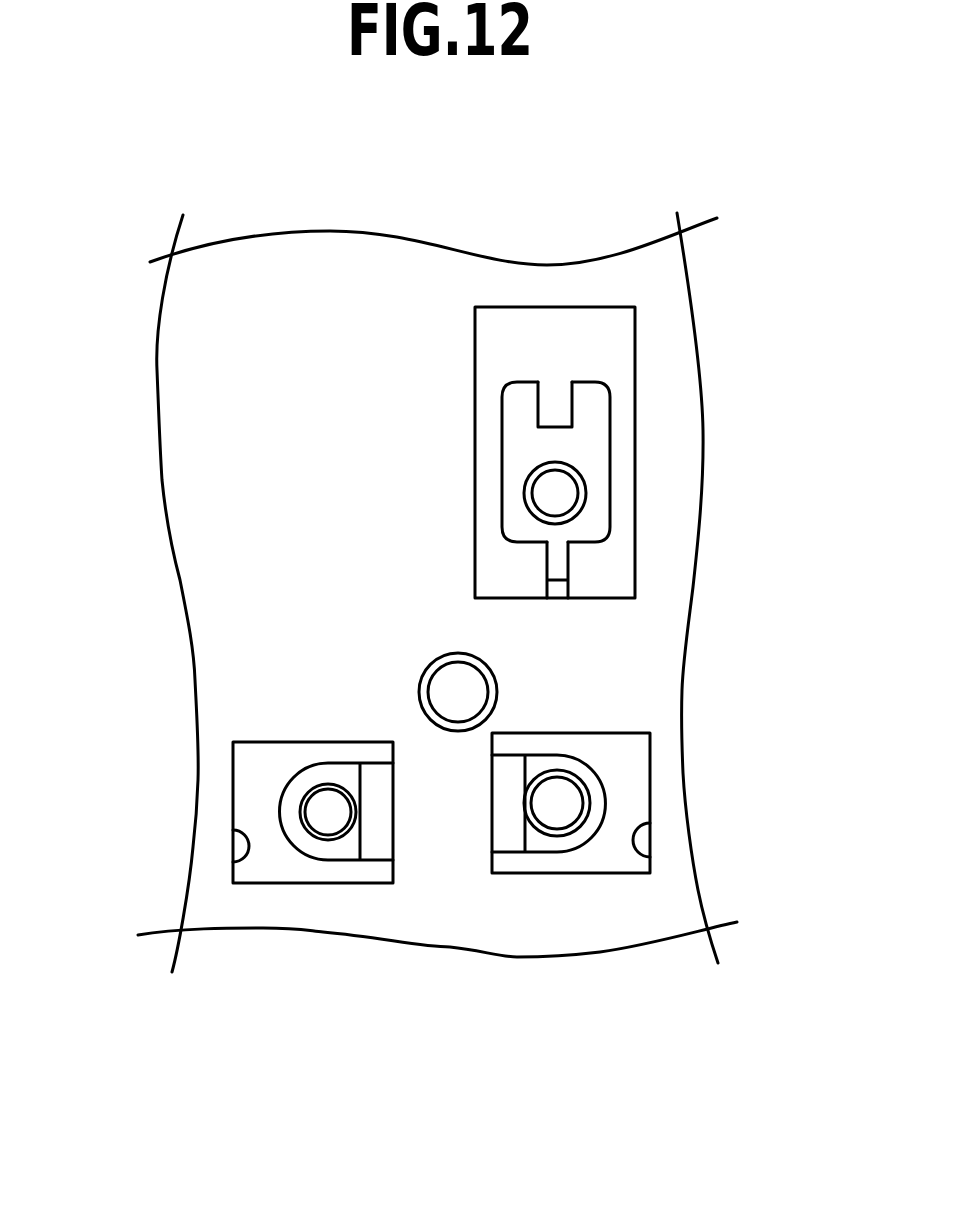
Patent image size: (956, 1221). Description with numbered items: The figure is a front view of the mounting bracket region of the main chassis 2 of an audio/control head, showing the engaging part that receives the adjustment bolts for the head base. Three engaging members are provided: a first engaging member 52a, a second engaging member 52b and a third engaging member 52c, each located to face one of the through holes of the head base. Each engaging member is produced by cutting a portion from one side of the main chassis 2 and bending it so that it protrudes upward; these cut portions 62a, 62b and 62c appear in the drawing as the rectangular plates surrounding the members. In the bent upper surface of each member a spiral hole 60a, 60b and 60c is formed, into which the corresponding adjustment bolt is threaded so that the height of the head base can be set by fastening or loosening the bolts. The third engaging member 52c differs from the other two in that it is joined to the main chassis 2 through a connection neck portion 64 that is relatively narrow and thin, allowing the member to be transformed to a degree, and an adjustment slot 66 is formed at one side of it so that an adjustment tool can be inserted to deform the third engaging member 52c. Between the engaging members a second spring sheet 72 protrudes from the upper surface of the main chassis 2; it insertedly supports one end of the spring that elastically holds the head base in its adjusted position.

The main chassis 2 is at (670, 377).
The first engaging member 52a is at (595, 787).
The second engaging member 52b is at (352, 850).
The third engaging member 52c is at (590, 425).
The spiral hole 60a is at (563, 810).
The spiral hole 60b is at (325, 823).
The spiral hole 60c is at (560, 495).
The cut portion 62a is at (652, 853).
The cut portion 62b is at (242, 862).
The cut portion 62c is at (563, 308).
The connection neck portion 64 is at (568, 560).
The adjustment slot 66 is at (555, 425).
The second spring sheet 72 is at (500, 690).